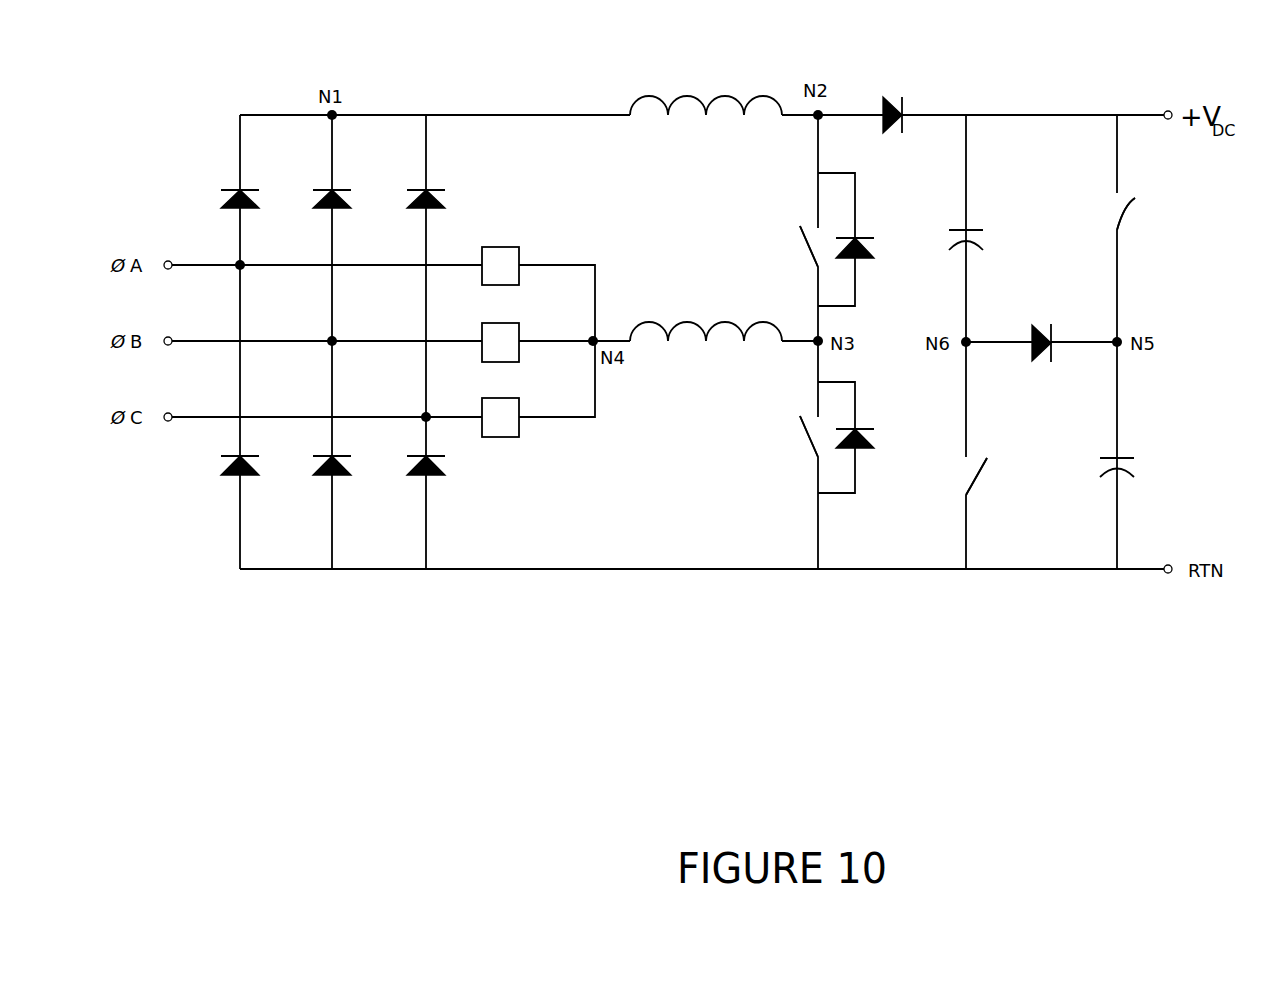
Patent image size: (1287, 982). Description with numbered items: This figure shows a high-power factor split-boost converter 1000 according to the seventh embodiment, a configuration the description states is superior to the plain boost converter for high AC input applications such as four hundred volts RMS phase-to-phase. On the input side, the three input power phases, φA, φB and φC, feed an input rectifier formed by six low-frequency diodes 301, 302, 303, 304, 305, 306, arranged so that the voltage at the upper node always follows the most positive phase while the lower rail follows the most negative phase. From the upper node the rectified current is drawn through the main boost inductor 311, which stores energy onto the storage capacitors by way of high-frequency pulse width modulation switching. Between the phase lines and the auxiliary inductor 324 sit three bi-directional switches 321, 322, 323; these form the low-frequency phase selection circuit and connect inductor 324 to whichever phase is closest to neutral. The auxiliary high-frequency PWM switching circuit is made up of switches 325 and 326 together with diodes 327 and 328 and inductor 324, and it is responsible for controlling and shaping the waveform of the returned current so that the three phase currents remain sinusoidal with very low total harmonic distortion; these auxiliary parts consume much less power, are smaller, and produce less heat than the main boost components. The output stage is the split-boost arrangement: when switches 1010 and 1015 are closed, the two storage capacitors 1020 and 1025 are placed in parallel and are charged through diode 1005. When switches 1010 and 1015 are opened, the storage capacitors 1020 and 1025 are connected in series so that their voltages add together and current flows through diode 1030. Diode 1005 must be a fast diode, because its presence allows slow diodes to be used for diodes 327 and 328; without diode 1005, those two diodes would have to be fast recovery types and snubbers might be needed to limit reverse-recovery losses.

The low-frequency diode 301 is at (262, 212).
The low-frequency diode 302 is at (355, 212).
The low-frequency diode 303 is at (405, 188).
The low-frequency diode 304 is at (262, 478).
The low-frequency diode 305 is at (355, 478).
The low-frequency diode 306 is at (405, 455).
The inductor 311 is at (688, 97).
The bi-directional switch 321 is at (523, 247).
The bi-directional switch 322 is at (523, 323).
The bi-directional switch 323 is at (523, 398).
The inductor 324 is at (688, 323).
The switch 325 is at (797, 230).
The switch 326 is at (797, 418).
The diode 327 is at (874, 235).
The diode 328 is at (874, 423).
The high-power factor split-boost converter 1000 is at (407, 663).
The diode 1005 is at (883, 97).
The switch 1010 is at (1139, 194).
The switch 1015 is at (989, 458).
The storage capacitor 1020 is at (989, 231).
The storage capacitor 1025 is at (1138, 458).
The diode 1030 is at (1032, 323).